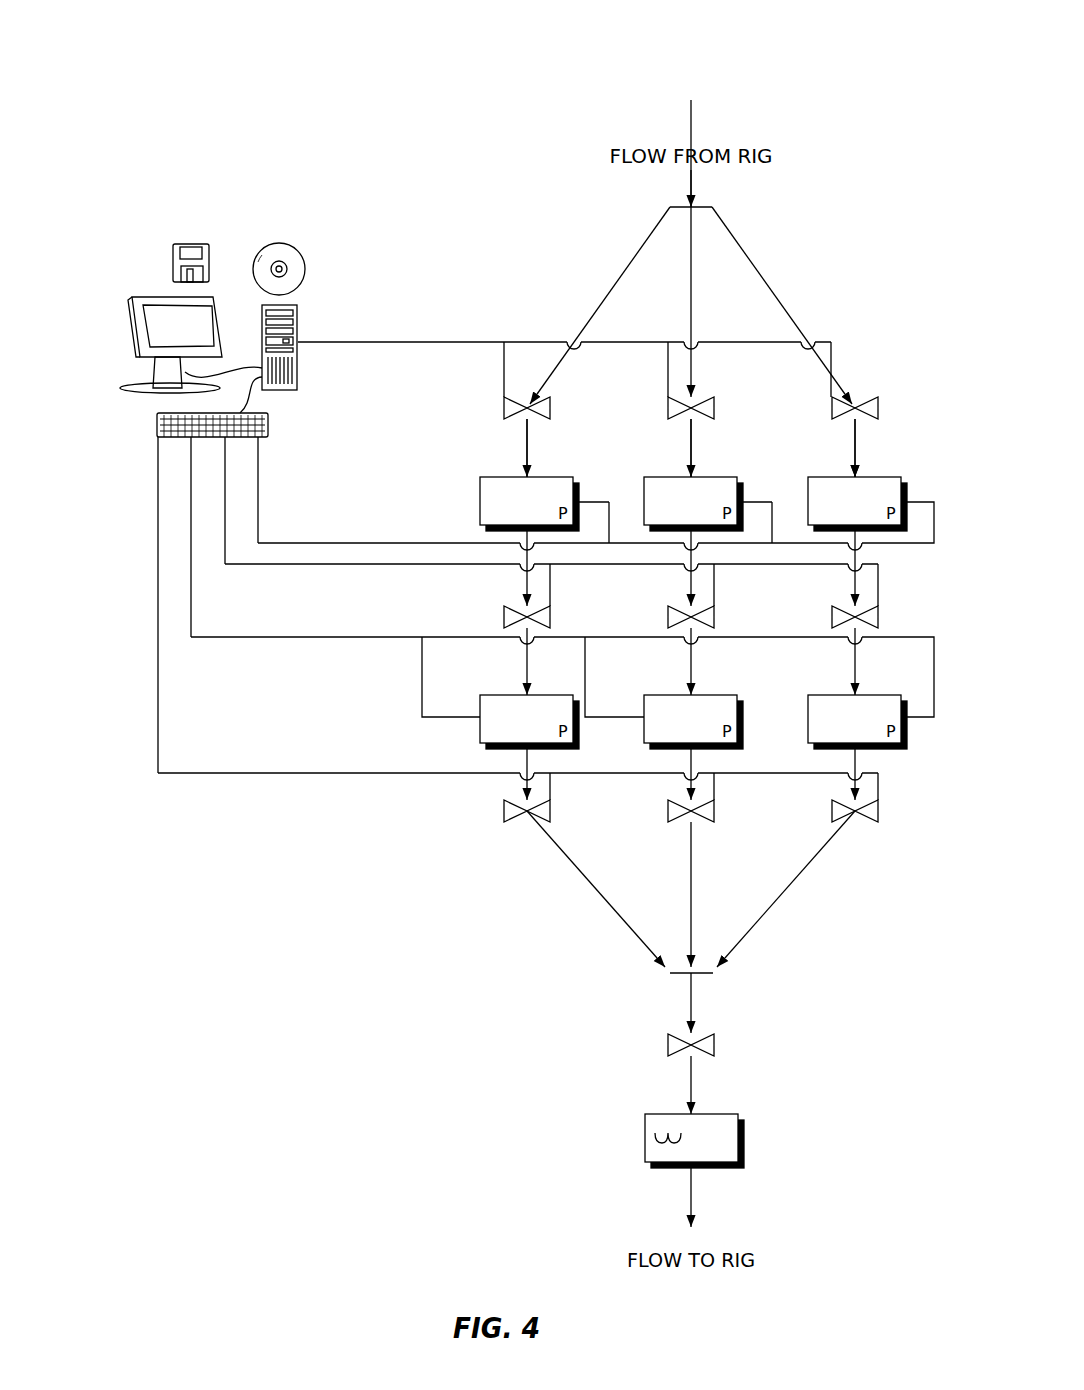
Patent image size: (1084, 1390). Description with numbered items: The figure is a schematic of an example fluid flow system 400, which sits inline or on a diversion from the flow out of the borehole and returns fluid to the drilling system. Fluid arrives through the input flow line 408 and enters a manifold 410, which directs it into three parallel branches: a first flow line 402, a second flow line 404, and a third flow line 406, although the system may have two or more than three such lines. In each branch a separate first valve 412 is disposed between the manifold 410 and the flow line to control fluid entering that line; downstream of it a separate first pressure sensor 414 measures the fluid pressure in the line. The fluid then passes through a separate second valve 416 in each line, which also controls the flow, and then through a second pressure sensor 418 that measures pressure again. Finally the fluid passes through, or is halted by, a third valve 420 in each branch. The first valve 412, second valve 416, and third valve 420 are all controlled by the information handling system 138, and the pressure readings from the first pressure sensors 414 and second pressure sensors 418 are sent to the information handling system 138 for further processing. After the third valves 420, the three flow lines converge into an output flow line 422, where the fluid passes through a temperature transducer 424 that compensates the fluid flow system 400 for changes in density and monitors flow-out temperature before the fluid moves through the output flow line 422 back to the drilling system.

The fluid flow system 400 is at (850, 44).
The information handling system 138 is at (145, 247).
The first flow line 402 is at (606, 298).
The second flow line 404 is at (694, 342).
The third flow line 406 is at (777, 298).
The input flow line 408 is at (693, 120).
The manifold 410 is at (700, 204).
The first valve 412 is at (545, 400).
The first pressure sensor 414 is at (495, 477).
The second valve 416 is at (507, 607).
The second pressure sensor 418 is at (497, 695).
The third valve 420 is at (505, 823).
The output flow line 422 is at (713, 1035).
The temperature transducer 424 is at (713, 1114).